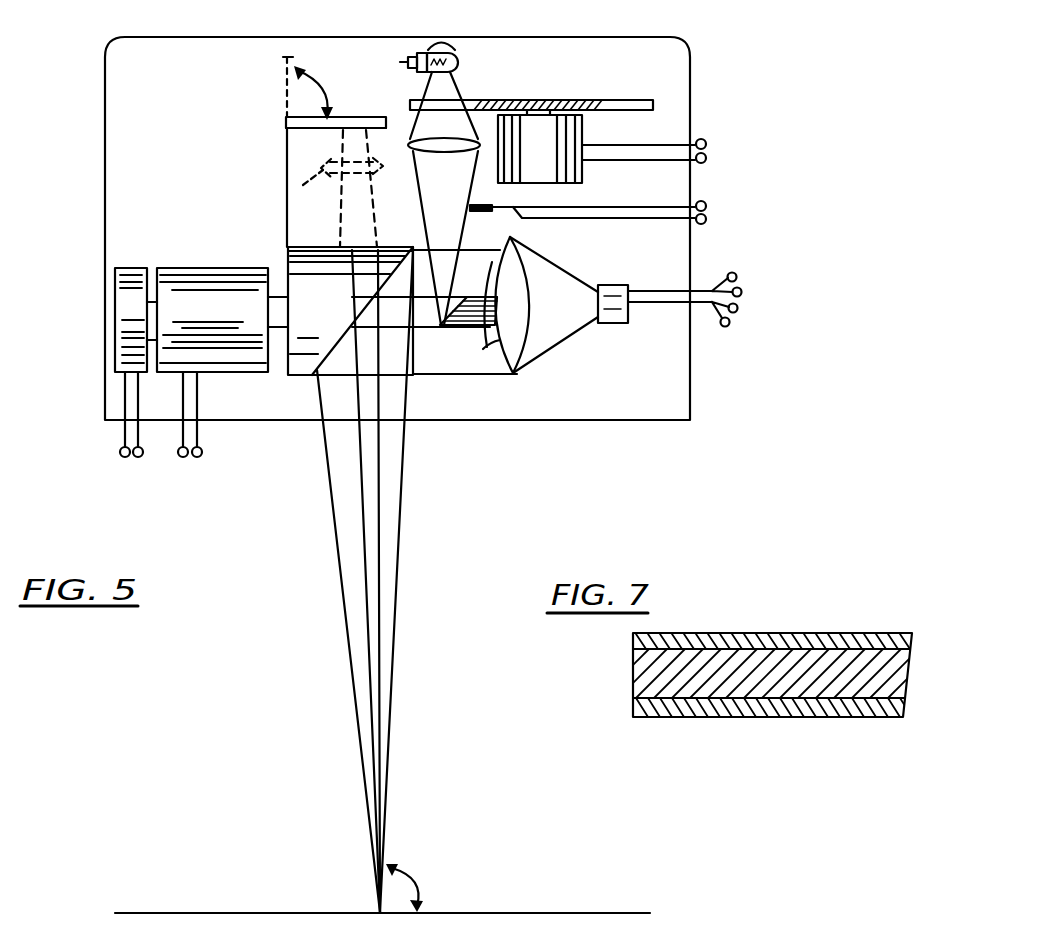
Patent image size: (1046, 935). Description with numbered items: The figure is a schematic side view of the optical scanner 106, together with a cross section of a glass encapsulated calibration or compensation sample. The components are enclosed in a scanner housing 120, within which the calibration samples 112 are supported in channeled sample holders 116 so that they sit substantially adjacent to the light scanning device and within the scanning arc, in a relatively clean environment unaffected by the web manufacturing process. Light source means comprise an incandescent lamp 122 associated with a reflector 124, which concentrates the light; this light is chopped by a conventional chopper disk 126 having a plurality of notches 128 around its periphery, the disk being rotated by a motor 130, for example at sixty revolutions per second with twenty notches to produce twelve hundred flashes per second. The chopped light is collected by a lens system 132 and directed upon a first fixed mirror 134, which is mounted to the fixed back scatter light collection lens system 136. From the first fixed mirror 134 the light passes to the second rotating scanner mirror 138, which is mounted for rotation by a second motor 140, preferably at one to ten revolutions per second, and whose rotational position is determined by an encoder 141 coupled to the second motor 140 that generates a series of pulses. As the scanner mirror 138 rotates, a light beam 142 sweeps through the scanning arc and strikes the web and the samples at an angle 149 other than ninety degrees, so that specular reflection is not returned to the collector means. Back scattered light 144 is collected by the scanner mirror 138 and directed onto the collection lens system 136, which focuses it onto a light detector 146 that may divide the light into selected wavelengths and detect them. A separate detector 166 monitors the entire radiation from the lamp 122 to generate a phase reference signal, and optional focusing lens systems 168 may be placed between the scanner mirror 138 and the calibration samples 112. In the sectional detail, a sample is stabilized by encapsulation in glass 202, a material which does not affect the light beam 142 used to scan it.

In FIG. 5, the optical scanner 106 is at (648, 419).
In FIG. 5, the calibration samples 112 is at (315, 137).
In FIG. 7, the calibration samples 112 is at (632, 673).
In FIG. 5, the channeled sample holders 116 is at (300, 117).
In FIG. 5, the scanner housing 120 is at (376, 245).
In FIG. 5, the incandescent lamp 122 is at (468, 63).
In FIG. 5, the reflector 124 is at (455, 46).
In FIG. 5, the chopper disk 126 is at (588, 100).
In FIG. 5, the notches 128 is at (415, 101).
In FIG. 5, the motor 130 is at (583, 127).
In FIG. 5, the lens system 132 is at (461, 152).
In FIG. 5, the first fixed mirror 134 is at (450, 378).
In FIG. 5, the fixed back scatter light collection lens system 136 is at (523, 353).
In FIG. 5, the second rotating scanner mirror 138 is at (338, 353).
In FIG. 5, the second motor 140 is at (228, 363).
In FIG. 5, the encoder 141 is at (133, 268).
In FIG. 5, the light beam 142 is at (381, 628).
In FIG. 5, the back scattered light 144 is at (492, 262).
In FIG. 5, the light detector 146 is at (615, 285).
In FIG. 5, the angle 149 is at (318, 75).
In FIG. 5, the separate detector 166 is at (474, 207).
In FIG. 5, the focusing lens systems 168 is at (287, 197).
In FIG. 7, the glass 202 is at (739, 633).